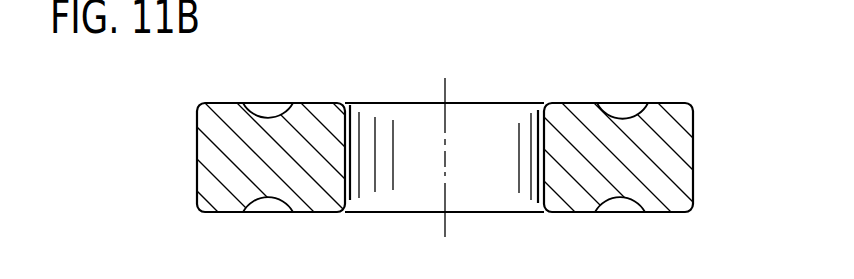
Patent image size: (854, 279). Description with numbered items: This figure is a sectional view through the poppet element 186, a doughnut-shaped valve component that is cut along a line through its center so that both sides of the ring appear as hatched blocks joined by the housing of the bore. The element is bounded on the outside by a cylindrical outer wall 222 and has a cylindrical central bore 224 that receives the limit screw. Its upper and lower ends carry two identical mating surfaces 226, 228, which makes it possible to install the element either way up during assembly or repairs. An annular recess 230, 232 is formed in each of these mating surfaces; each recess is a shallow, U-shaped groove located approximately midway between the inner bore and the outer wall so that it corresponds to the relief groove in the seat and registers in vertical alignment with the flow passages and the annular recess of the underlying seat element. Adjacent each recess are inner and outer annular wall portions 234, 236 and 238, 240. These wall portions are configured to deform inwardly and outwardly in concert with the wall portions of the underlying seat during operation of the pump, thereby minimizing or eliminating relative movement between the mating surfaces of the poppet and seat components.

The poppet element 186 is at (188, 135).
The cylindrical outer wall 222 is at (197, 165).
The cylindrical central bore 224 is at (413, 108).
The mating surface 226 is at (663, 103).
The mating surface 228 is at (662, 213).
The annular recess 230 is at (263, 107).
The annular recess 232 is at (266, 212).
The inner annular wall portion 234 is at (327, 107).
The outer annular wall portion 236 is at (217, 103).
The inner annular wall portion 238 is at (327, 212).
The outer annular wall portion 240 is at (225, 213).